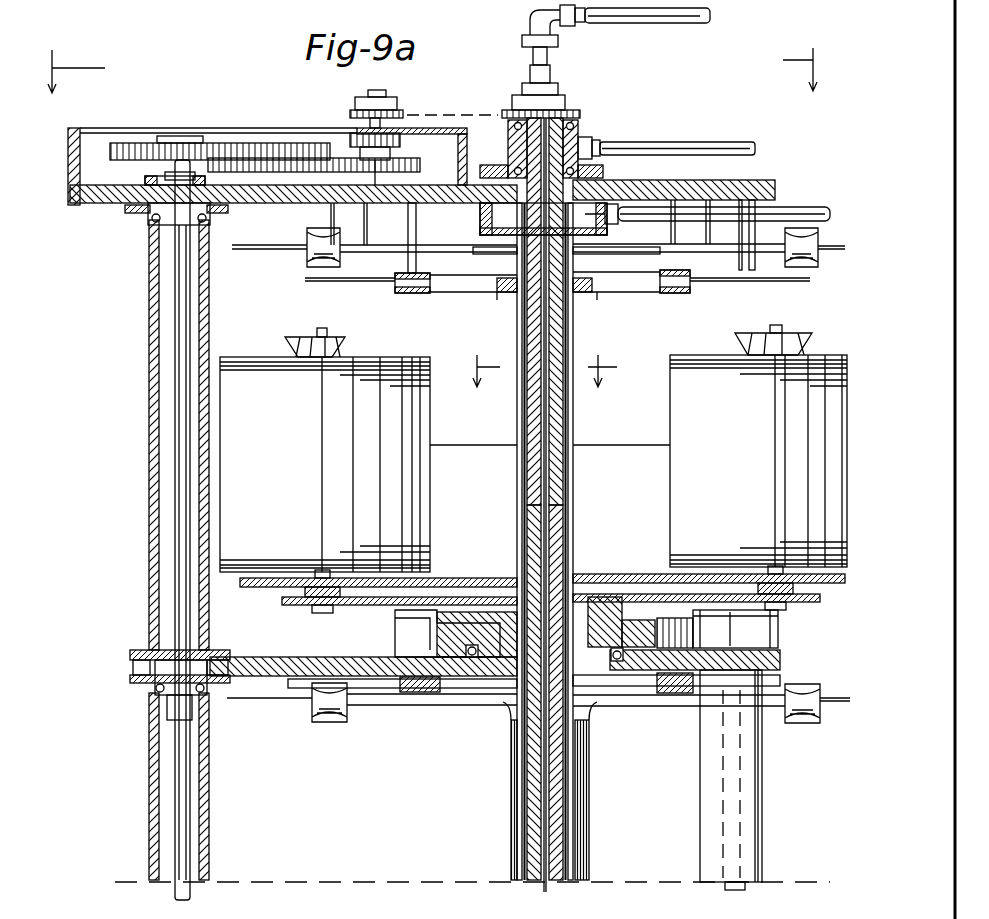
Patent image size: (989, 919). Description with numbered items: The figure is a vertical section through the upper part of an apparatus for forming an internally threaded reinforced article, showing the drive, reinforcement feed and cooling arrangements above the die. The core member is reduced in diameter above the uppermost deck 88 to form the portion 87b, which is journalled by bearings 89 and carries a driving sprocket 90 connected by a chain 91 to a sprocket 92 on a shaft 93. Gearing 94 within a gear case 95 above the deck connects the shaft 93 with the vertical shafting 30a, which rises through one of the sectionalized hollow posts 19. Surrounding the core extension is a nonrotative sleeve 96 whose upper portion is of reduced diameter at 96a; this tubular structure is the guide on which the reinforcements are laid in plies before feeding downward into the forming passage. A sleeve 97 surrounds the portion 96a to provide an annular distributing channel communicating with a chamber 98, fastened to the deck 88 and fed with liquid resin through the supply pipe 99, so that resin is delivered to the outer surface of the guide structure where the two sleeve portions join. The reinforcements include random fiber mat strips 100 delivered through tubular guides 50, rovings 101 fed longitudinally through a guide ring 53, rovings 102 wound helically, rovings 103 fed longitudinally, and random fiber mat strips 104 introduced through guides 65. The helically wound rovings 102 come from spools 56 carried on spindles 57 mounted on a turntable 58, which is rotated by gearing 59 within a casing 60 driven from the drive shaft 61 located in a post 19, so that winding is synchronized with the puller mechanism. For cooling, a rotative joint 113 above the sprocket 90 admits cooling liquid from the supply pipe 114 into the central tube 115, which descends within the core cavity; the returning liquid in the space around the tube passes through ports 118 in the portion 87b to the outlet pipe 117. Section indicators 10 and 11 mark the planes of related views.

The section line 10- 10 is at (437, 70).
The section line 11- 11 is at (540, 369).
The sectionalized hollow post 19 is at (150, 470).
The vertical shafting 30a is at (175, 320).
The tubular guide 50 is at (398, 245).
The guide ring 53 is at (598, 292).
The spool 56 is at (430, 506).
The spindle 57 is at (326, 330).
The turntable 58 is at (377, 607).
The gearing 59 is at (468, 652).
The casing 60 is at (779, 633).
The drive shaft 61 is at (742, 825).
The guide 65 is at (403, 706).
The reduced-diameter core portion 87b is at (510, 163).
The uppermost deck 88 is at (660, 172).
The bearing 89 is at (575, 124).
The driving sprocket 90 is at (512, 113).
The chain 91 is at (455, 116).
The sprocket 92 is at (352, 133).
The shaft 93 is at (352, 106).
The gearing 94 is at (315, 147).
The gear case 95 is at (126, 128).
The nonrotative sleeve 96 is at (578, 832).
The reduced-diameter sleeve portion 96a is at (563, 426).
The sleeve 97 is at (515, 255).
The chamber 98 is at (480, 221).
The supply pipe 99 is at (783, 205).
The random fiber mat strip 100 is at (292, 250).
The roving 101 is at (372, 280).
The helically wound roving 102 is at (500, 448).
The roving 103 is at (297, 682).
The random fiber mat strip 104 is at (232, 699).
The rotative joint 113 is at (553, 50).
The supply pipe 114 is at (662, 24).
The central tube 115 is at (543, 548).
The outlet pipe 117 is at (667, 142).
The port 118 is at (580, 137).